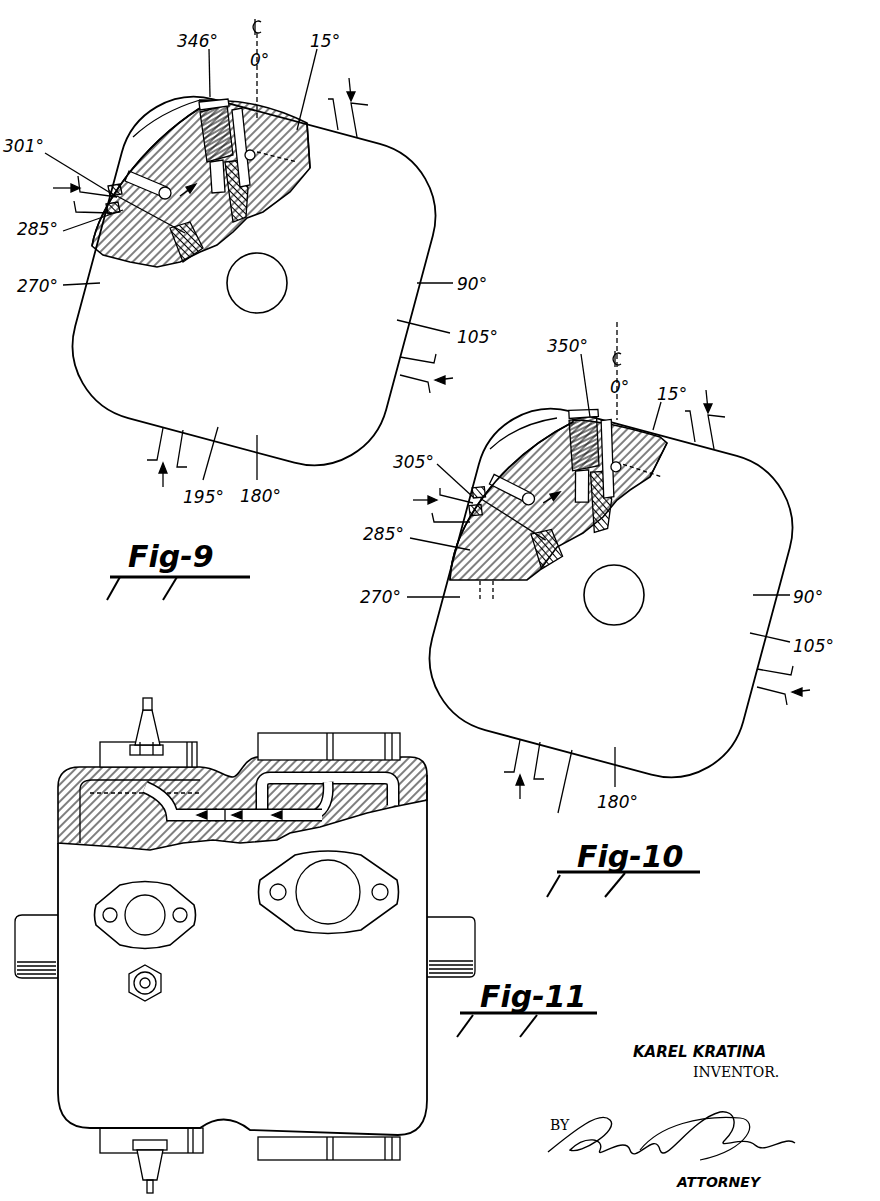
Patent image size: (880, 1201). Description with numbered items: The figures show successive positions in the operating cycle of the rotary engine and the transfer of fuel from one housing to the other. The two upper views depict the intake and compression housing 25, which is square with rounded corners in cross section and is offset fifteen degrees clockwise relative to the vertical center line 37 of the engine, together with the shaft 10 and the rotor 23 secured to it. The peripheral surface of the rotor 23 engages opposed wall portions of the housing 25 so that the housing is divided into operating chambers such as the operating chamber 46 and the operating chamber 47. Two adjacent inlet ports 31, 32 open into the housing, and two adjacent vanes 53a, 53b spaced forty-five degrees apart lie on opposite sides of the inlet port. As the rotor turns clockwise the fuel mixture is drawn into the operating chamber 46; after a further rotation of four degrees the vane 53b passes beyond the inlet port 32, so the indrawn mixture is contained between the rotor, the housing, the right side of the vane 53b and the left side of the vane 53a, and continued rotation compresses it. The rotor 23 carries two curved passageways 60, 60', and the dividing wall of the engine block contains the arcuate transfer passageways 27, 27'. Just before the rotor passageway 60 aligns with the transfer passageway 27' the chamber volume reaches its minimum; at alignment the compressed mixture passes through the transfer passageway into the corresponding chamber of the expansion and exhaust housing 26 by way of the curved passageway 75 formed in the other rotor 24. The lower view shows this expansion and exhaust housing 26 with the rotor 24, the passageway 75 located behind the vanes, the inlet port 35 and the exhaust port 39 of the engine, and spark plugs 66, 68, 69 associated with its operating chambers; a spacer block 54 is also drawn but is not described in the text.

In FIG. 9, the shaft 10 is at (279, 263).
In FIG. 10, the shaft 10 is at (636, 573).
In FIG. 11, the shaft 10 is at (453, 917).
In FIG. 9, the rotor 23 is at (157, 153).
In FIG. 10, the rotor 23 is at (533, 447).
In FIG. 11, the rotor 23 is at (417, 790).
In FIG. 11, the rotor 24 is at (80, 777).
In FIG. 9, the intake and compression housing 25 is at (463, 181).
In FIG. 10, the intake and compression housing 25 is at (815, 497).
In FIG. 11, the intake and compression housing 25 is at (430, 817).
In FIG. 11, the expansion and exhaust housing 26 is at (77, 767).
In FIG. 9, the arcuate transfer passageway 27 is at (147, 245).
In FIG. 10, the arcuate transfer passageway 27 is at (513, 567).
In FIG. 9, the arcuate transfer passageway 27' is at (295, 160).
In FIG. 10, the arcuate transfer passageway 27' is at (650, 473).
In FIG. 11, the arcuate transfer passageway 27' is at (215, 838).
In FIG. 9, the inlet port 31 is at (353, 103).
In FIG. 10, the inlet port 31 is at (710, 420).
In FIG. 9, the inlet port 32 is at (77, 190).
In FIG. 10, the inlet port 32 is at (437, 494).
In FIG. 11, the inlet port 35 is at (367, 862).
In FIG. 9, the vertical center line 37 is at (259, 77).
In FIG. 10, the vertical center line 37 is at (617, 328).
In FIG. 11, the exhaust port 39 is at (127, 890).
In FIG. 9, the operating chamber 46 is at (157, 130).
In FIG. 10, the operating chamber 46 is at (513, 447).
In FIG. 11, the operating chamber 47 is at (393, 777).
In FIG. 9, the vane 53a is at (200, 110).
In FIG. 10, the vane 53a is at (573, 427).
In FIG. 9, the vane 53b is at (117, 227).
In FIG. 10, the vane 53b is at (460, 553).
In FIG. 9, the spacer block 54 is at (242, 217).
In FIG. 10, the spacer block 54 is at (607, 507).
In FIG. 9, the curved rotor passageway 60 is at (130, 171).
In FIG. 10, the curved rotor passageway 60 is at (494, 472).
In FIG. 11, the curved rotor passageway 60 is at (267, 836).
In FIG. 9, the curved rotor passageway 60' is at (262, 140).
In FIG. 10, the curved rotor passageway 60' is at (621, 450).
In FIG. 11, the spark plug 66 is at (163, 723).
In FIG. 11, the spark plug 68 is at (160, 1170).
In FIG. 11, the spark plug 69 is at (160, 983).
In FIG. 11, the curved passageway 75 is at (170, 820).